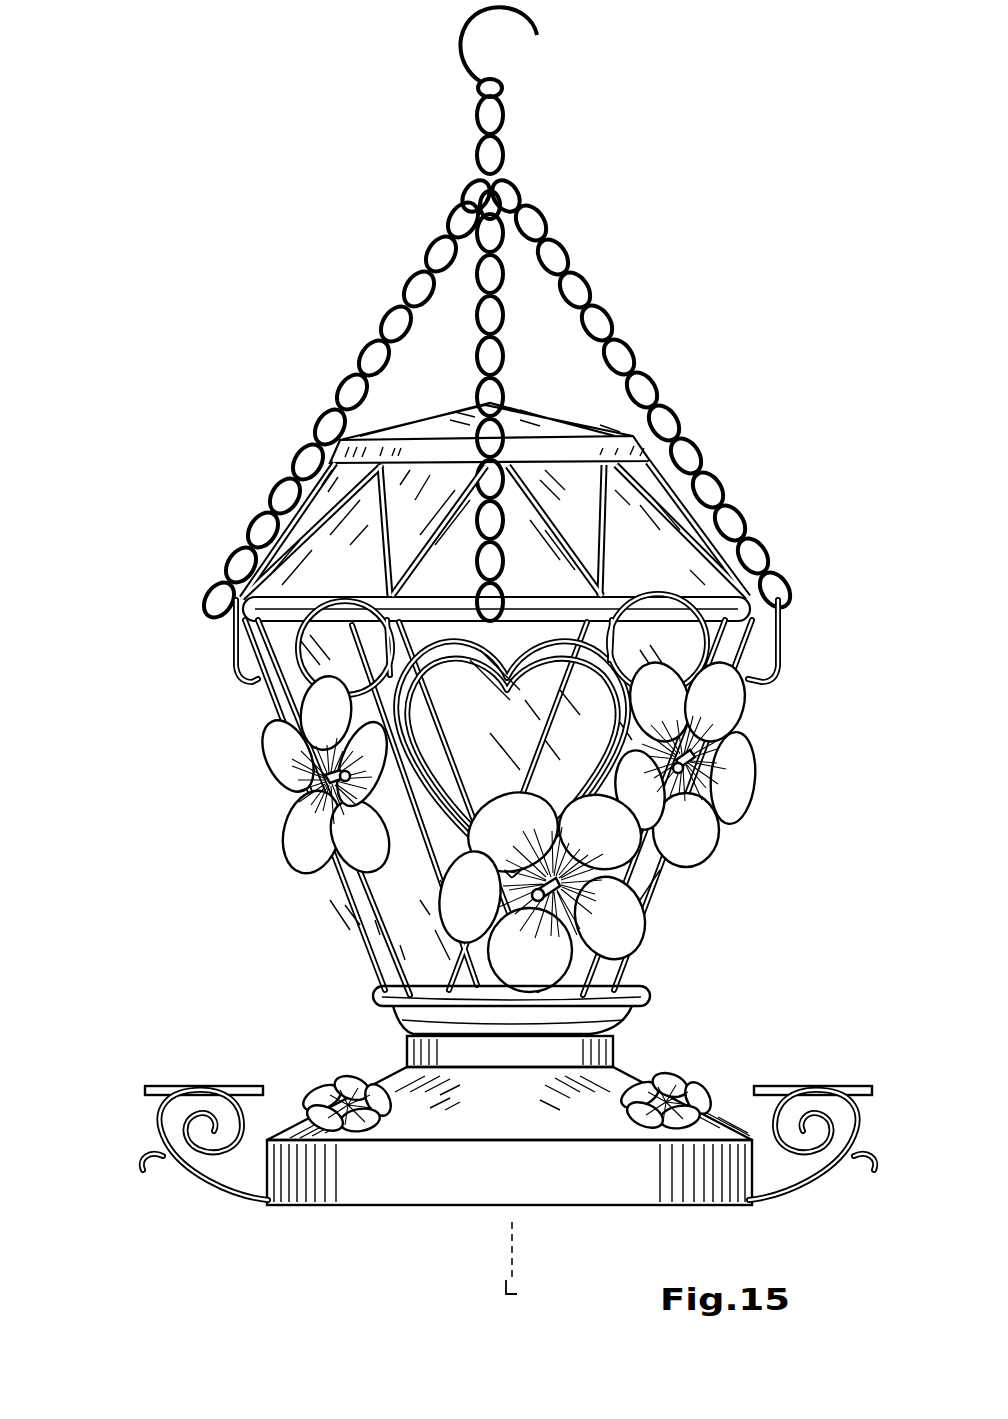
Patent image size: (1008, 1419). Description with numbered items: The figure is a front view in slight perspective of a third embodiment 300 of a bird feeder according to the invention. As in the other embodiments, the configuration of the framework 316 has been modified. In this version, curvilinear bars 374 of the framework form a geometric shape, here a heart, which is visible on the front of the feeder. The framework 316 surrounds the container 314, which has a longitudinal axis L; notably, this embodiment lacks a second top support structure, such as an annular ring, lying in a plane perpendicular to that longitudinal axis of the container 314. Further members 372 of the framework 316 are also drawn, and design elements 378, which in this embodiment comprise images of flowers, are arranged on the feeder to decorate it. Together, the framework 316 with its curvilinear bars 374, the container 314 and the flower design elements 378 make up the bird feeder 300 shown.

The third embodiment of a bird feeder 300 is at (475, 606).
The container 314 is at (570, 388).
The framework 316 is at (475, 804).
The wire frame members 372 is at (372, 914).
The curvilinear bars 374 is at (420, 822).
The design elements 378 is at (333, 800).